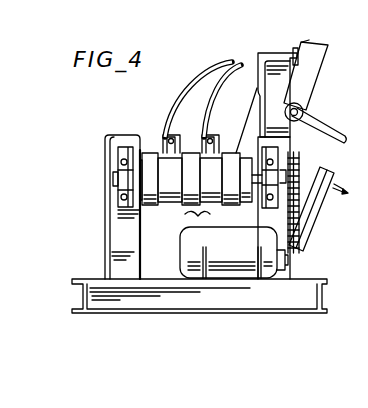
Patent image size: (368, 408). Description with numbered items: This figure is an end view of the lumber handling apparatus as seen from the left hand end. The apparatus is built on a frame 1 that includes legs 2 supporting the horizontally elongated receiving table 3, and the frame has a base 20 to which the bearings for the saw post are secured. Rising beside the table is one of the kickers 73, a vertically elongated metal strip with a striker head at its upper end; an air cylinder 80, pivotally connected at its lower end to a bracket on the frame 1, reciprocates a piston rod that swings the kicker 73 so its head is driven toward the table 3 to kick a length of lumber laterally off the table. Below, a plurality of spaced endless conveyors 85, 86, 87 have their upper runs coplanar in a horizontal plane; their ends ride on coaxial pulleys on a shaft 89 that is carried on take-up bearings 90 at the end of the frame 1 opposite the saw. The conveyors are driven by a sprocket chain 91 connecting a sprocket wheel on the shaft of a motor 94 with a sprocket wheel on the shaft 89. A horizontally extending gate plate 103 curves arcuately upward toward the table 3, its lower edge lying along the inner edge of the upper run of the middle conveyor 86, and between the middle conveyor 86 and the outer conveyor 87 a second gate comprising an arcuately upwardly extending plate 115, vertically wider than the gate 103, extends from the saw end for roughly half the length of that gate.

The frame 1 is at (98, 234).
The legs 2 is at (286, 142).
The receiving table 3 is at (276, 53).
The base 20 is at (317, 296).
The kicker 73 is at (319, 52).
The air cylinder 80 is at (317, 198).
The endless conveyor 85 is at (233, 152).
The middle endless conveyor 86 is at (192, 152).
The outer endless conveyor 87 is at (150, 206).
The shaft 89 is at (116, 180).
The take-up bearings 90 is at (124, 173).
The sprocket chain 91 is at (300, 238).
The motor 94 is at (192, 243).
The gate plate 103 is at (241, 61).
The arcuately upwardly extending plate 115 is at (181, 79).